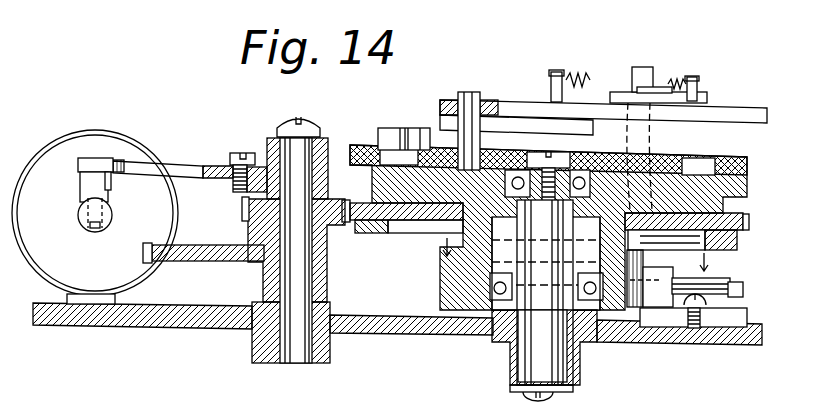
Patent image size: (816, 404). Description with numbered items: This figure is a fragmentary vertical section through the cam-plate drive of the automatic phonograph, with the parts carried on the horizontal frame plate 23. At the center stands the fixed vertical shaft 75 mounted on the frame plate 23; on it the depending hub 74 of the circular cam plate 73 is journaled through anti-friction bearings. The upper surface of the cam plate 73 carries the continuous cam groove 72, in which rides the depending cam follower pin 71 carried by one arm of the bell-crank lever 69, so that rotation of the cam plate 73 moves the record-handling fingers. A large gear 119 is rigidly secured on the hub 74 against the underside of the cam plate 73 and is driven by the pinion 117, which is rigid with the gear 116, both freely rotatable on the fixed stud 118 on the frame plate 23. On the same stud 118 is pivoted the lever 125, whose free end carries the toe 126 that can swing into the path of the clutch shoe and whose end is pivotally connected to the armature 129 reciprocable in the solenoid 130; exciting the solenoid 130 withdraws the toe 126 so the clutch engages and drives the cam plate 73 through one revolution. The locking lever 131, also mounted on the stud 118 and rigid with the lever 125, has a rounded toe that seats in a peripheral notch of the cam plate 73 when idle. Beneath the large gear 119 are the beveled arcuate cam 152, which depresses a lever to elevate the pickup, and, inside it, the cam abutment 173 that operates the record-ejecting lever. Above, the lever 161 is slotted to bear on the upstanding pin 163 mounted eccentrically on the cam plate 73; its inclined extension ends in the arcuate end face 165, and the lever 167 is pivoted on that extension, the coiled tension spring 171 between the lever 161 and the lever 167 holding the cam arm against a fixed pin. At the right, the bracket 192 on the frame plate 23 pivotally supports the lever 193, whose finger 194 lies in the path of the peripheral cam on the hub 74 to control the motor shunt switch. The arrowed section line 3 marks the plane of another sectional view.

The section line 3- 3 is at (577, 255).
The frame plate 23 is at (184, 316).
The bell-crank lever 69 is at (409, 125).
The cam follower pin 71 is at (399, 129).
The cam groove 72 is at (690, 160).
The cam plate 73 is at (748, 169).
The hub 74 is at (468, 292).
The vertical shaft 75 is at (528, 345).
The gear 116 is at (200, 251).
The pinion 117 is at (242, 207).
The stud 118 is at (277, 283).
The large gear 119 is at (749, 222).
The lever 125 is at (176, 166).
The toe 126 is at (91, 161).
The armature 129 is at (78, 219).
The solenoid 130 is at (95, 130).
The locking lever 131 is at (263, 165).
The arcuate cam 152 is at (352, 233).
The lever 161 is at (488, 100).
The pin 163 is at (469, 92).
The arcuate end face 165 is at (740, 116).
The lever 167 is at (700, 100).
The coiled tension spring 171 is at (584, 76).
The cam abutment 173 is at (737, 242).
The bracket 192 is at (748, 319).
The lever 193 is at (717, 293).
The finger 194 is at (700, 262).